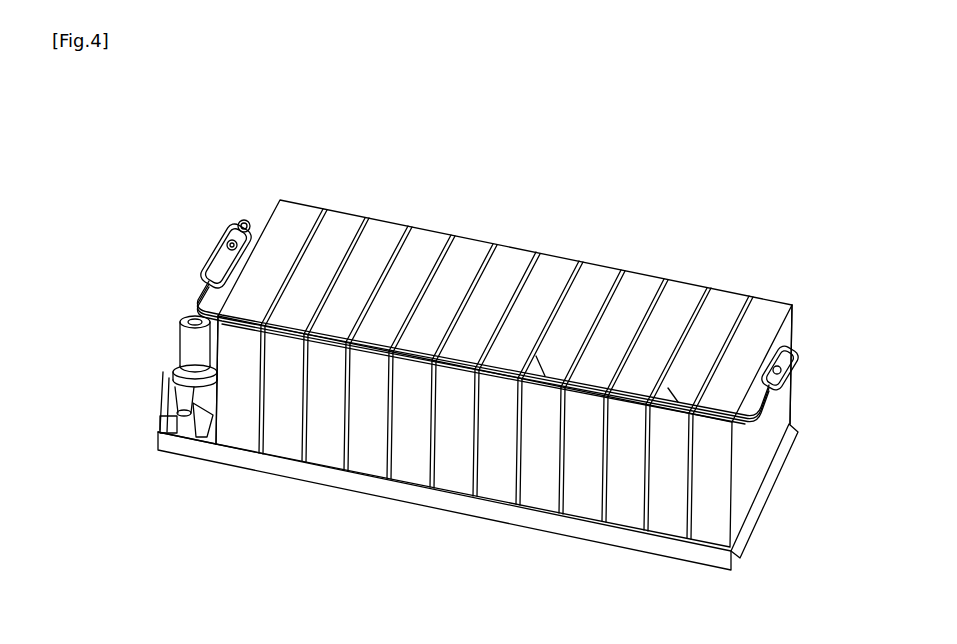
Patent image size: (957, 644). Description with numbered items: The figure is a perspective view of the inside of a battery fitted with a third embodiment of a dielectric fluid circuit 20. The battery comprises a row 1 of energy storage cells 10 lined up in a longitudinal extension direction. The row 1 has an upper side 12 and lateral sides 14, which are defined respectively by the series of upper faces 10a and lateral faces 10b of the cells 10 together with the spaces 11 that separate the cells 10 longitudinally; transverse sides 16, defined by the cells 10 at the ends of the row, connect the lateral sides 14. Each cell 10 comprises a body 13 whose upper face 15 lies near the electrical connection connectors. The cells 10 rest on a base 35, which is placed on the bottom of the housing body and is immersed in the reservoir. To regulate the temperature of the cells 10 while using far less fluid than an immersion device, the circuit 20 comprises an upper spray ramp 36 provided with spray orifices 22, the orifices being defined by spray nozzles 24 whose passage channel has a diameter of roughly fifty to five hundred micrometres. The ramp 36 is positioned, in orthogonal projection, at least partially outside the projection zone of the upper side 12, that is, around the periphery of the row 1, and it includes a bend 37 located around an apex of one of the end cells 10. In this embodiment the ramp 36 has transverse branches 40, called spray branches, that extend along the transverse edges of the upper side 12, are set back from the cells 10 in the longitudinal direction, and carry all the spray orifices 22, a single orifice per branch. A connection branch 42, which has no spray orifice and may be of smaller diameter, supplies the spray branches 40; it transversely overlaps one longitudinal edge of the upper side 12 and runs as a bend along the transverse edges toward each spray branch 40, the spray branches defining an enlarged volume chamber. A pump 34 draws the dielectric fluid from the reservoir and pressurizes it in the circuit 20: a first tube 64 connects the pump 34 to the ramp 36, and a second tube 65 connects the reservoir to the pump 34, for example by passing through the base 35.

The row of energy storage cells 1 is at (800, 373).
The energy storage cell 10 is at (504, 365).
The upper face of cell 10a is at (504, 365).
The lateral face of cell 10b is at (504, 365).
The space separating cells 11 is at (421, 250).
The upper side of row 12 is at (504, 355).
The body of cell 13 is at (504, 365).
The lateral side of row 14 is at (444, 506).
The upper face of body 15 is at (504, 365).
The transverse side of row 16 is at (740, 470).
The dielectric fluid circuit 20 is at (673, 390).
The spray orifice 22 is at (498, 279).
The spray nozzle 24 is at (498, 279).
The pump 34 is at (188, 347).
The base 35 is at (393, 488).
The spray ramp 36 is at (538, 362).
The bend 37 is at (220, 323).
The transverse branch 40 is at (498, 279).
The connection branch 42 is at (467, 353).
The first tube 64 is at (176, 433).
The second tube 65 is at (222, 227).